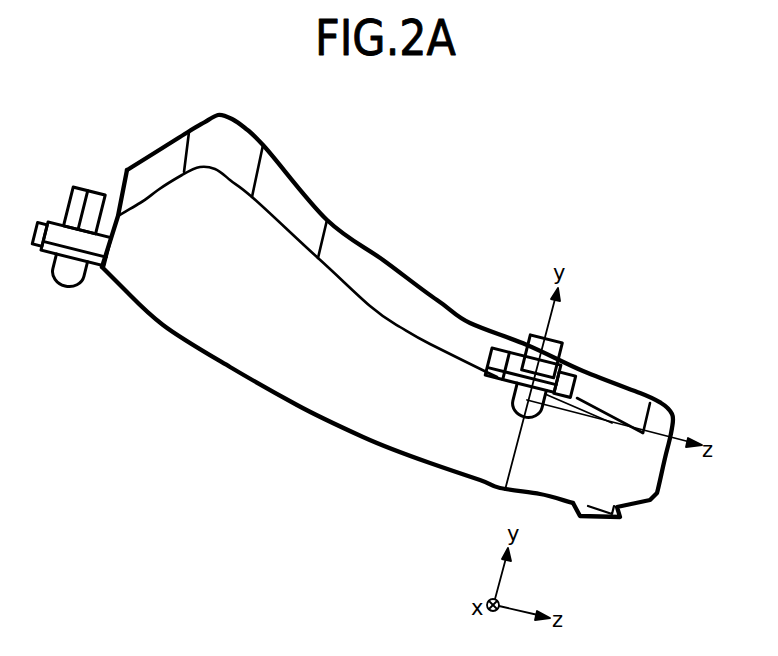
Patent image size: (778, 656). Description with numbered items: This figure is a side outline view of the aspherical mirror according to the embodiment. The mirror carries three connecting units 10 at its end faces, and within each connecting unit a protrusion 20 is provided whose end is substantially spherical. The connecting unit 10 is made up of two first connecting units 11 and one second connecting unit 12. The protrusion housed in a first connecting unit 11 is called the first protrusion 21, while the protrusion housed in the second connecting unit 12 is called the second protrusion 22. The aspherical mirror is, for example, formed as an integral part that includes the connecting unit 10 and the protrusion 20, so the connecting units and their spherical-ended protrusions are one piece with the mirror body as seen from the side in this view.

The connecting unit 10 is at (384, 316).
The first connecting unit 11 is at (515, 343).
The second connecting unit 12 is at (95, 187).
The protrusion 20 is at (298, 374).
The first protrusion 21 is at (505, 490).
The second protrusion 22 is at (65, 290).